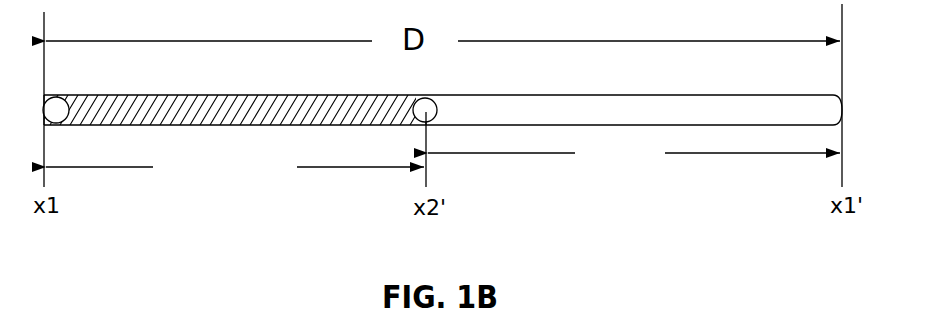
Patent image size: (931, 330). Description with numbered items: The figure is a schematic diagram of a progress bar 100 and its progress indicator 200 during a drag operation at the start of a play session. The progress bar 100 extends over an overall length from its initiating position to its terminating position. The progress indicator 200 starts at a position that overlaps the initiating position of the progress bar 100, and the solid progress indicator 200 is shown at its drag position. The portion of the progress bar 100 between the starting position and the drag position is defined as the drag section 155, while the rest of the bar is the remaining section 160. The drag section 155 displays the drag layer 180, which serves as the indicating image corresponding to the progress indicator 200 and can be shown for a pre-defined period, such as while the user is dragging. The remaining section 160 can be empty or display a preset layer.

The progress bar 100 is at (441, 86).
The drag layer 180 is at (297, 112).
The progress indicator 200 is at (420, 103).
The drag section 155 is at (225, 167).
The remaining section 160 is at (622, 153).